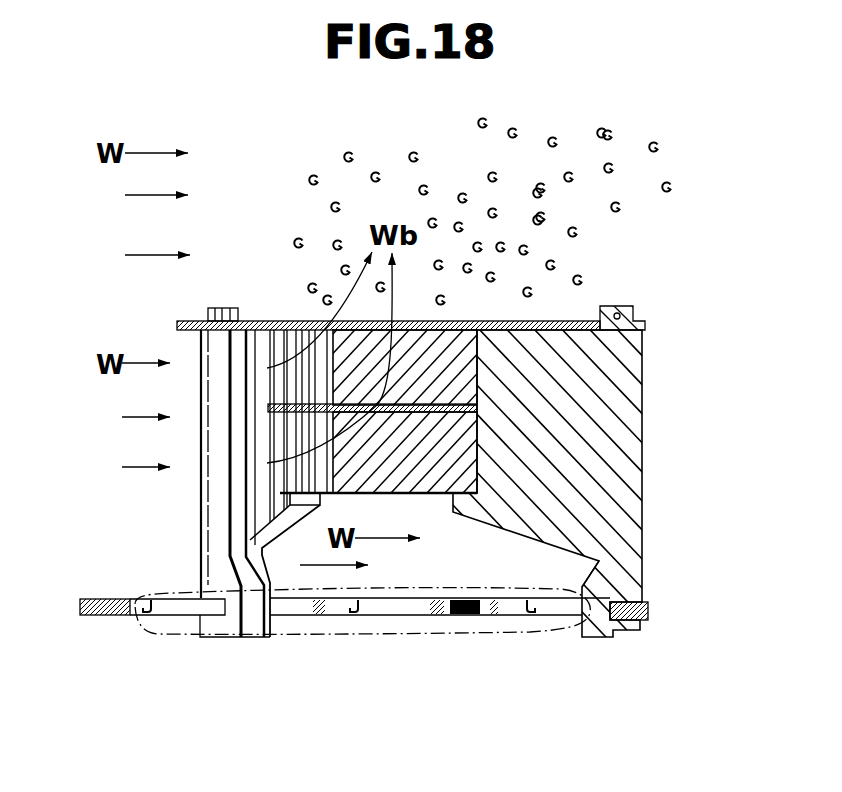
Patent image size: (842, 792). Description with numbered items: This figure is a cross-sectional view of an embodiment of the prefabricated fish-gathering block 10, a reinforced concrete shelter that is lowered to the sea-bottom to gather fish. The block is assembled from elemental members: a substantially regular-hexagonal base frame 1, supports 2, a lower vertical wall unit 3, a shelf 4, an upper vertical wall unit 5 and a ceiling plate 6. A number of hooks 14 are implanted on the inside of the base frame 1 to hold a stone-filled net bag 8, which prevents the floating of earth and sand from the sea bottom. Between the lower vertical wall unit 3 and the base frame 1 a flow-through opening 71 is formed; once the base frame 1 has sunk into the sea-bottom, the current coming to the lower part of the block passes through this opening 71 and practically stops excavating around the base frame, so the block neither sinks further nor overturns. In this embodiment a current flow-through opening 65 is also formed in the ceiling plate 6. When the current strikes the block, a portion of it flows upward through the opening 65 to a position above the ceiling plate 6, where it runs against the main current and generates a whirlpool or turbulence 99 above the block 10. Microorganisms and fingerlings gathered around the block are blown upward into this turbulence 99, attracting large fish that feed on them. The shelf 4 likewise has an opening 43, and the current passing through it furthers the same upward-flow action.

The whirlpool or turbulence 99 is at (599, 132).
The current flow-through opening 65 is at (321, 321).
The ceiling plate 6 is at (581, 321).
The fish-gathering block 10 is at (646, 307).
The supports 2 is at (198, 528).
The opening 71 is at (572, 571).
The upper vertical wall unit 5 is at (444, 344).
The lower vertical wall unit 3 is at (414, 495).
The shelf 4 is at (278, 405).
The opening 43 is at (340, 436).
The base frame 1 is at (71, 612).
The stone-filled net bag 8 is at (420, 636).
The hooks 14 is at (528, 618).